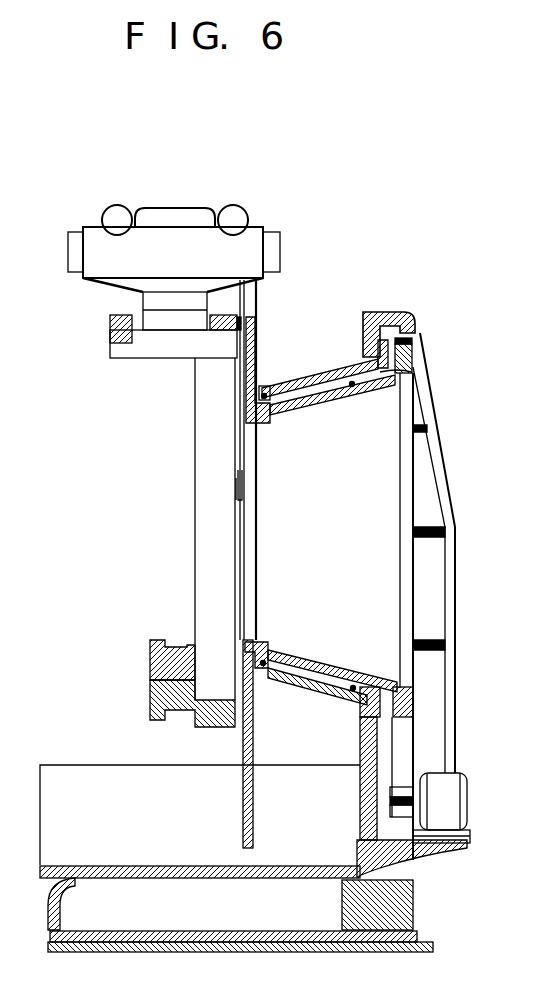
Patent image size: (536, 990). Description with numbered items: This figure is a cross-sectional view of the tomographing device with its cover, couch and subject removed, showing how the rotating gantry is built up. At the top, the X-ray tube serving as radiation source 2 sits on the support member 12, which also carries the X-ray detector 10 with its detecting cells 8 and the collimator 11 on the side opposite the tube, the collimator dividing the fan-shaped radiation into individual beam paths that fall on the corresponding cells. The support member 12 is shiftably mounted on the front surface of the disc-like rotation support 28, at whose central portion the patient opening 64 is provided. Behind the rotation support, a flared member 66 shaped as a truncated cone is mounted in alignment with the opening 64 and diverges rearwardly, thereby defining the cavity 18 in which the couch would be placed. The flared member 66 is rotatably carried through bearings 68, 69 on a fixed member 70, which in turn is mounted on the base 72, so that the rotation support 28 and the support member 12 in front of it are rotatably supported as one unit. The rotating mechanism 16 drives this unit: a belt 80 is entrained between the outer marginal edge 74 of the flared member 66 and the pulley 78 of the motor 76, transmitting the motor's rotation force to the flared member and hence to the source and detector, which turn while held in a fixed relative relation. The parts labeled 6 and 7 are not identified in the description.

The radiation source 2 is at (195, 213).
The neck 7 is at (150, 303).
The flange 6 is at (158, 344).
The support member 12 is at (200, 532).
The patient opening 64 is at (245, 460).
The rotation support 28 is at (260, 332).
The bearing 68 is at (266, 388).
The fixed member 70 is at (305, 380).
The bearing 69 is at (345, 382).
The rotating mechanism 16 is at (414, 340).
The outer marginal edge 74 is at (413, 343).
The flared member 66 is at (400, 386).
The cavity 18 is at (388, 576).
The collimator 11 is at (150, 657).
The detecting cells 8 is at (150, 703).
The radiation detector 10 is at (178, 712).
The belt 80 is at (405, 738).
The base 72 is at (360, 804).
The motor 76 is at (456, 804).
The pulley 78 is at (400, 812).